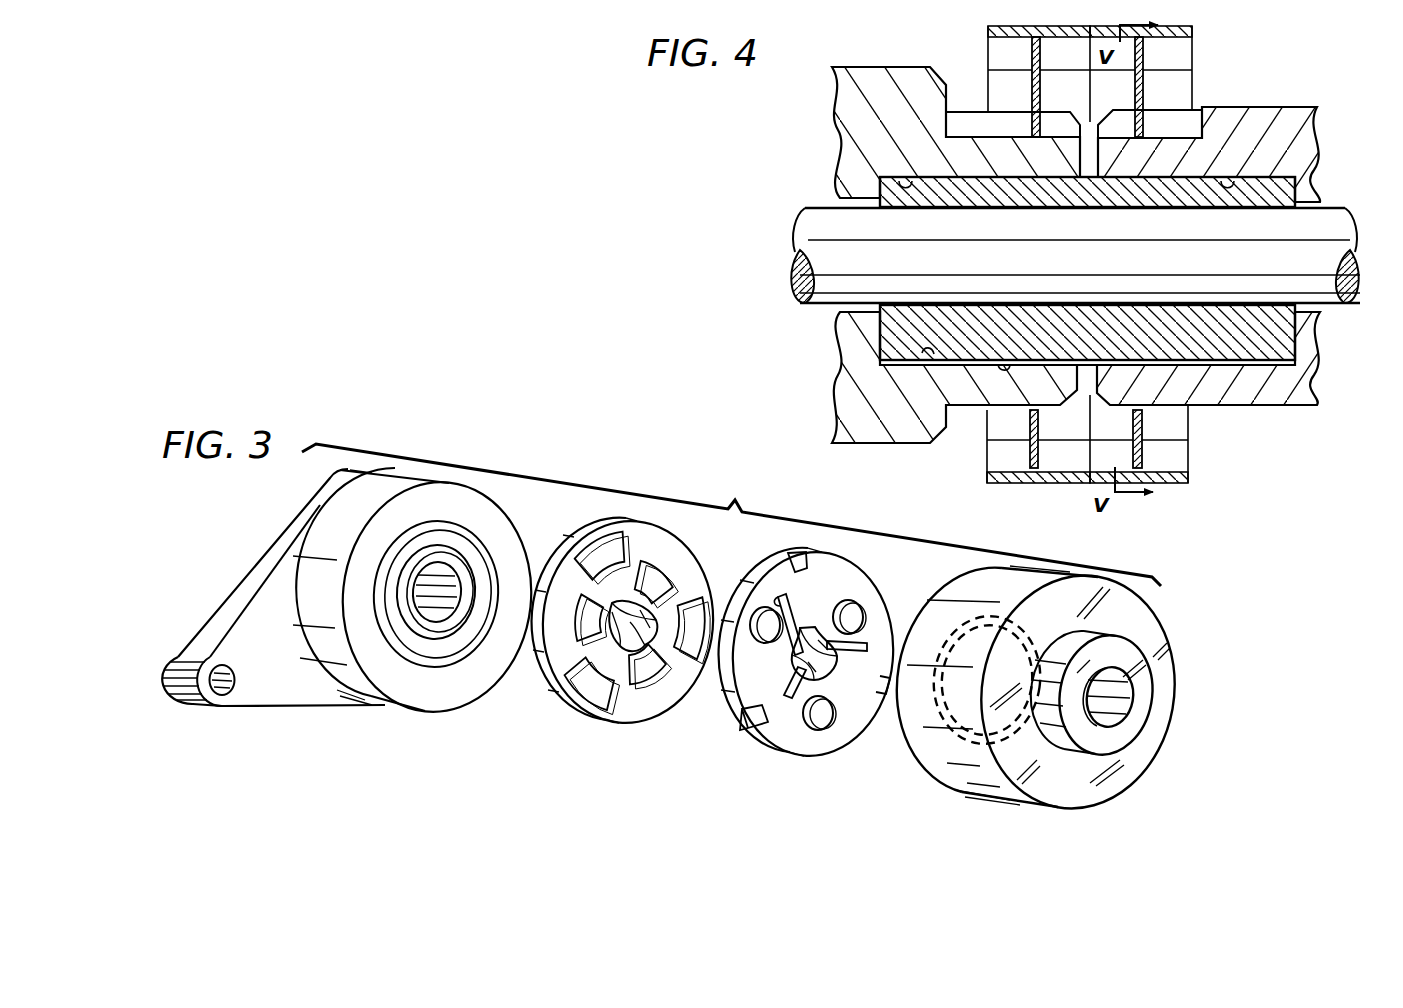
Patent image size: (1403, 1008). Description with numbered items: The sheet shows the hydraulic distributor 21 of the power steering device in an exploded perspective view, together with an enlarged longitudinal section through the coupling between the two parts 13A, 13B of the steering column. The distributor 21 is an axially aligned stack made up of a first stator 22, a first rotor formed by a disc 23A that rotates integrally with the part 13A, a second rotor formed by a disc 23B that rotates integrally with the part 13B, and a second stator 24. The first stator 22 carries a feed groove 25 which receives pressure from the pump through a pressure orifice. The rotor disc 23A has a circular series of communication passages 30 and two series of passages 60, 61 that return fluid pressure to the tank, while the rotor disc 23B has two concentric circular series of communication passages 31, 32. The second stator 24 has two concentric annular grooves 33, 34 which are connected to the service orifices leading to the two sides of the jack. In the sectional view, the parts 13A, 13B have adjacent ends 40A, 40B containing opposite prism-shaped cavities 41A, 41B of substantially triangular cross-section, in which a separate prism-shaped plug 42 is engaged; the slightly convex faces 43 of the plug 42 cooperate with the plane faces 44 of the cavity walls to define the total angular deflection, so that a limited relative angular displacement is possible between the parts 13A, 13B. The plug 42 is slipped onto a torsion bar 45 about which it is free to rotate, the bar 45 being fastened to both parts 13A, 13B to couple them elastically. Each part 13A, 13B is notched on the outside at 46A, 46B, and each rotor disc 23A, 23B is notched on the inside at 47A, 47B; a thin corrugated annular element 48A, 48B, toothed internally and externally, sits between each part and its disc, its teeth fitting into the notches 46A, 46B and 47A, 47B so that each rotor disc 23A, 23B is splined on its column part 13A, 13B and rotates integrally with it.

In FIG. 4, the part of the steering column 13A is at (1300, 106).
In FIG. 4, the part of the steering column 13B is at (872, 66).
In FIG. 3, the distributor 21 is at (1060, 692).
In FIG. 3, the first stator 22 is at (1160, 642).
In FIG. 4, the rotor disc 23A is at (1195, 31).
In FIG. 3, the rotor disc 23A is at (805, 650).
In FIG. 4, the rotor disc 23B is at (988, 31).
In FIG. 3, the rotor disc 23B is at (624, 635).
In FIG. 3, the second stator 24 is at (366, 706).
In FIG. 3, the feed groove 25 is at (907, 762).
In FIG. 3, the communication passages 30 is at (856, 603).
In FIG. 3, the communication passages 31 is at (603, 545).
In FIG. 3, the communication passages 32 is at (662, 570).
In FIG. 3, the annular groove 33 is at (443, 524).
In FIG. 3, the annular groove 34 is at (412, 618).
In FIG. 4, the end 40A is at (1096, 165).
In FIG. 4, the end 40B is at (1082, 152).
In FIG. 4, the prism-shaped cavity 41A is at (1230, 181).
In FIG. 4, the prism-shaped cavity 41B is at (904, 181).
In FIG. 4, the prism-shaped plug 42 is at (890, 323).
In FIG. 4, the faces of the plug 43 is at (1006, 364).
In FIG. 4, the faces of the cavity wall 44 is at (926, 355).
In FIG. 4, the torsion bar 45 is at (815, 212).
In FIG. 4, the notches 46A is at (1193, 120).
In FIG. 4, the notches 46B is at (992, 114).
In FIG. 4, the notches 47A is at (1118, 70).
In FIG. 3, the notches 47A is at (810, 626).
In FIG. 4, the notches 47B is at (1068, 70).
In FIG. 3, the notches 47B is at (620, 610).
In FIG. 4, the corrugated annular element 48A is at (1143, 63).
In FIG. 4, the corrugated annular element 48B is at (1032, 63).
In FIG. 3, the passages 60 is at (750, 758).
In FIG. 3, the passages 61 is at (792, 557).